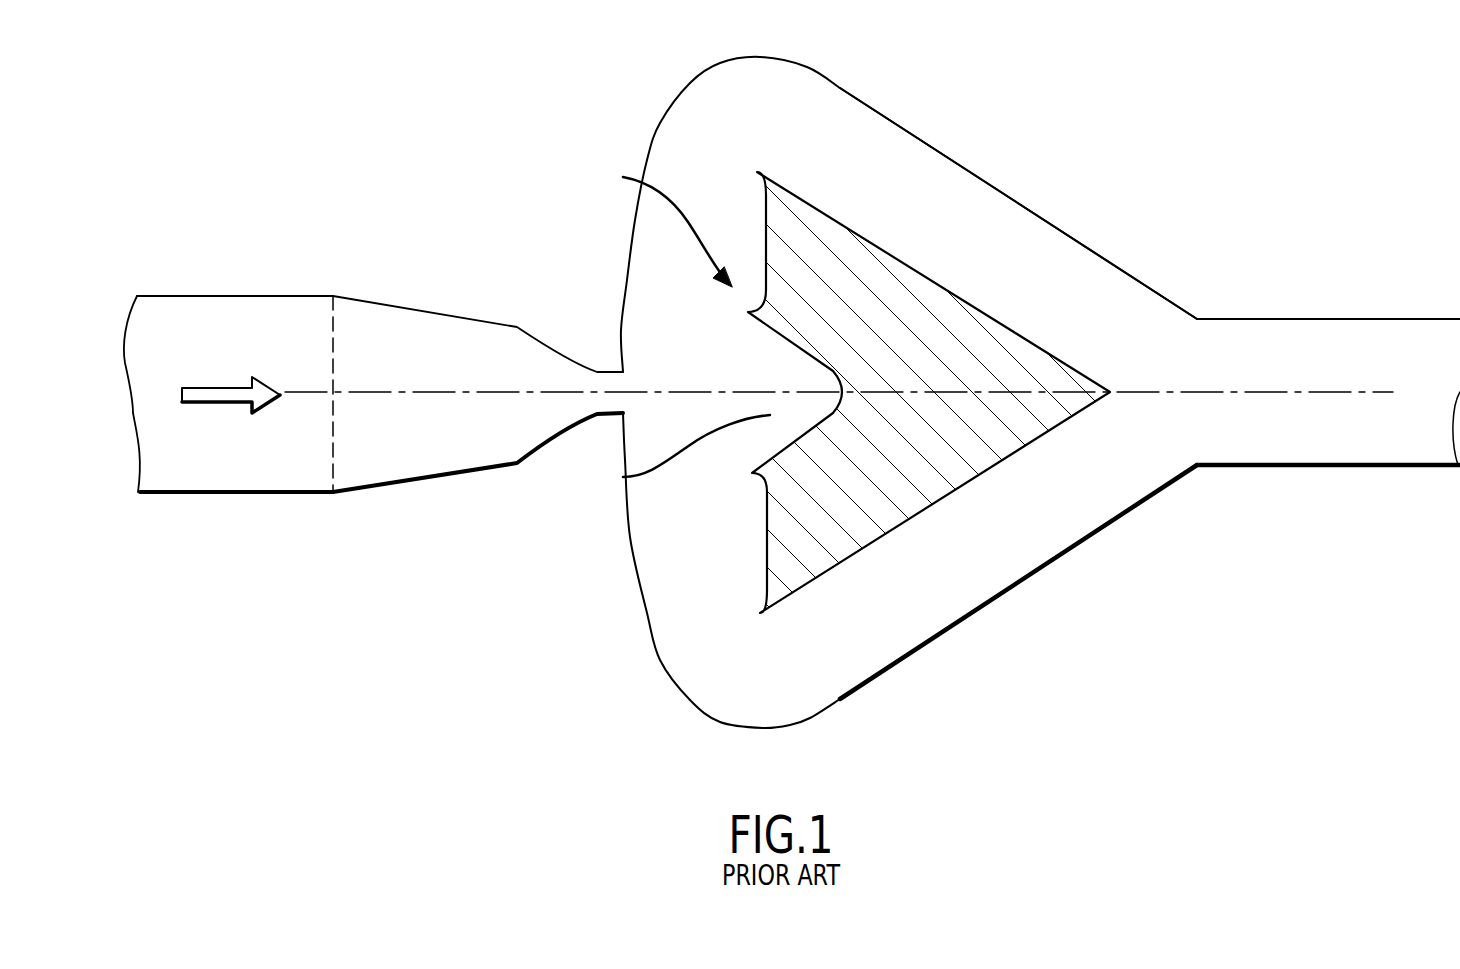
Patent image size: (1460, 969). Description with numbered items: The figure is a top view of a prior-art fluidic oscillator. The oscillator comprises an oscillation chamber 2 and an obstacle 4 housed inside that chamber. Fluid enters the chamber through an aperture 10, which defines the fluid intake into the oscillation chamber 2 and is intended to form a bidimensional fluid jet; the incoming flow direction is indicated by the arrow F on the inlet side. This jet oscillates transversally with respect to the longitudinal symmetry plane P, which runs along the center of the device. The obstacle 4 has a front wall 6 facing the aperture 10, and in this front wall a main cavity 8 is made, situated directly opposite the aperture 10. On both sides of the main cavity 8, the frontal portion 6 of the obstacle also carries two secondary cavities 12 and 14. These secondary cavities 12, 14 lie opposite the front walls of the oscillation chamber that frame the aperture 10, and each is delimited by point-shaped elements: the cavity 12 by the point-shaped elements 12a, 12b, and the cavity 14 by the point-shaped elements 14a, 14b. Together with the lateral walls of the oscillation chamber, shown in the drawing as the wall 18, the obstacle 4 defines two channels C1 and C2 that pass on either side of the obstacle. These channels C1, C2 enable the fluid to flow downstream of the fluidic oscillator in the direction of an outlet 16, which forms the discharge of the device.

The oscillation chamber 2 is at (775, 728).
The obstacle 4 is at (800, 560).
The front wall 6 is at (664, 224).
The main cavity 8 is at (623, 475).
The aperture 10 is at (603, 388).
The secondary cavity 12 is at (753, 225).
The point-shaped element 12a is at (748, 312).
The point-shaped element 12b is at (752, 173).
The secondary cavity 14 is at (758, 545).
The point-shaped element 14a is at (750, 473).
The point-shaped element 14b is at (750, 612).
The outlet 16 is at (1385, 338).
The housing wall 18 is at (997, 190).
The longitudinal symmetry plane P is at (1268, 392).
The channel C1 is at (946, 246).
The channel C2 is at (968, 544).
The flow direction F is at (231, 386).